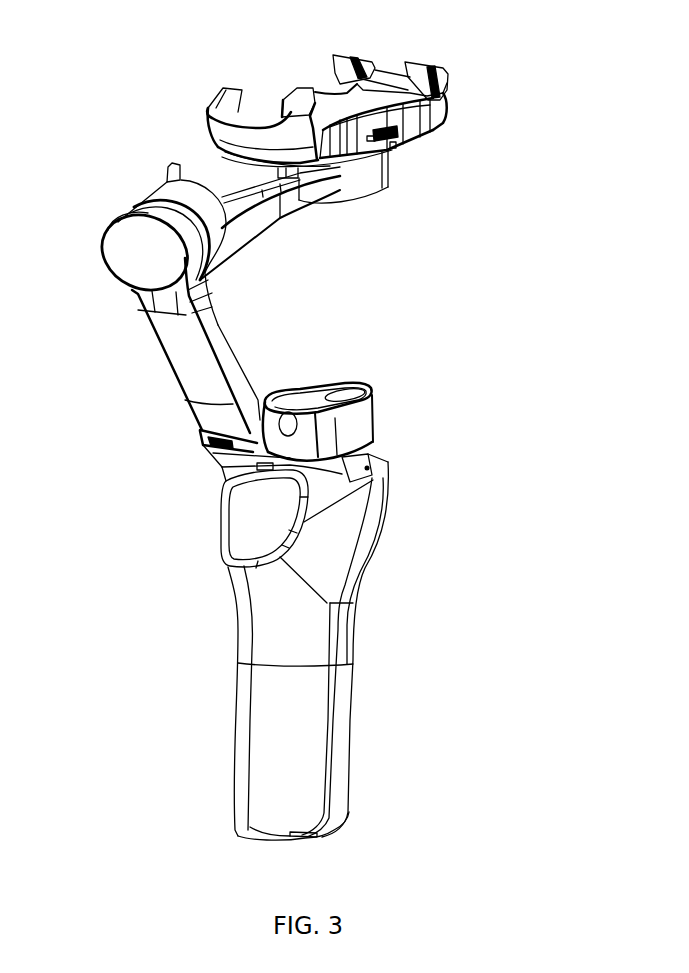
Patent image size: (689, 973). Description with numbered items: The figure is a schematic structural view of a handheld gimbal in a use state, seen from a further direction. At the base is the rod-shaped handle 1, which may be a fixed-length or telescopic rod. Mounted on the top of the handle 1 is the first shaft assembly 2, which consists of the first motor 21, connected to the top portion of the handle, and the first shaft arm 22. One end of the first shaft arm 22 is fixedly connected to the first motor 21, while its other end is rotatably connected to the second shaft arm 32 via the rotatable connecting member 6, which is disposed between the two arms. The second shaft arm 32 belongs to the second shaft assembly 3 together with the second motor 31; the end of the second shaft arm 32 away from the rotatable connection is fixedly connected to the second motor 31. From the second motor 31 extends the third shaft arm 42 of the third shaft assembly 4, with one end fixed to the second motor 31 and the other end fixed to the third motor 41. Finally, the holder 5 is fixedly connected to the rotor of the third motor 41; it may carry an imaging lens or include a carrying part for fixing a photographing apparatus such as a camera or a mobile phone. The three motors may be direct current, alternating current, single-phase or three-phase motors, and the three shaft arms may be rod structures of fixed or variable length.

The handle 1 is at (273, 690).
The first shaft assembly 2 is at (391, 395).
The first motor 21 is at (337, 400).
The first shaft arm 22 is at (310, 437).
The second shaft assembly 3 is at (272, 298).
The second motor 31 is at (218, 266).
The second shaft arm 32 is at (222, 348).
The third shaft assembly 4 is at (367, 215).
The third motor 41 is at (383, 160).
The third shaft arm 42 is at (272, 222).
The holder 5 is at (327, 97).
The rotatable connecting member 6 is at (300, 423).